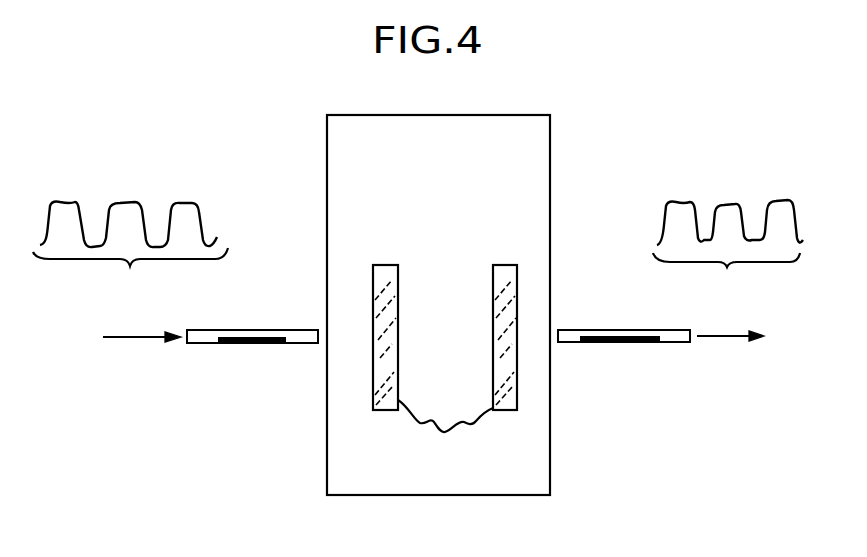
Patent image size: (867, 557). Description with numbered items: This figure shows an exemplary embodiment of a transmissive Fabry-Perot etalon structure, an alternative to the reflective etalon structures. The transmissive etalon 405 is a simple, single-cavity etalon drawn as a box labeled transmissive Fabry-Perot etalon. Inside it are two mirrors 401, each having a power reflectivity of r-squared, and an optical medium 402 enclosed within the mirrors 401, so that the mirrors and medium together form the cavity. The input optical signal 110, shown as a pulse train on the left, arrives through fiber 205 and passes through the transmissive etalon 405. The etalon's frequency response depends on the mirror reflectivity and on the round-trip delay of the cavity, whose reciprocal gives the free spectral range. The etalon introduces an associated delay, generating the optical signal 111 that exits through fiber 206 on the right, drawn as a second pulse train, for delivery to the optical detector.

The optical signal 110 is at (123, 337).
The optical signal 111 is at (718, 336).
The fiber 205 is at (245, 345).
The fiber 206 is at (630, 343).
The mirrors 401 is at (445, 439).
The optical medium 402 is at (443, 303).
The transmissive etalon 405 is at (551, 140).